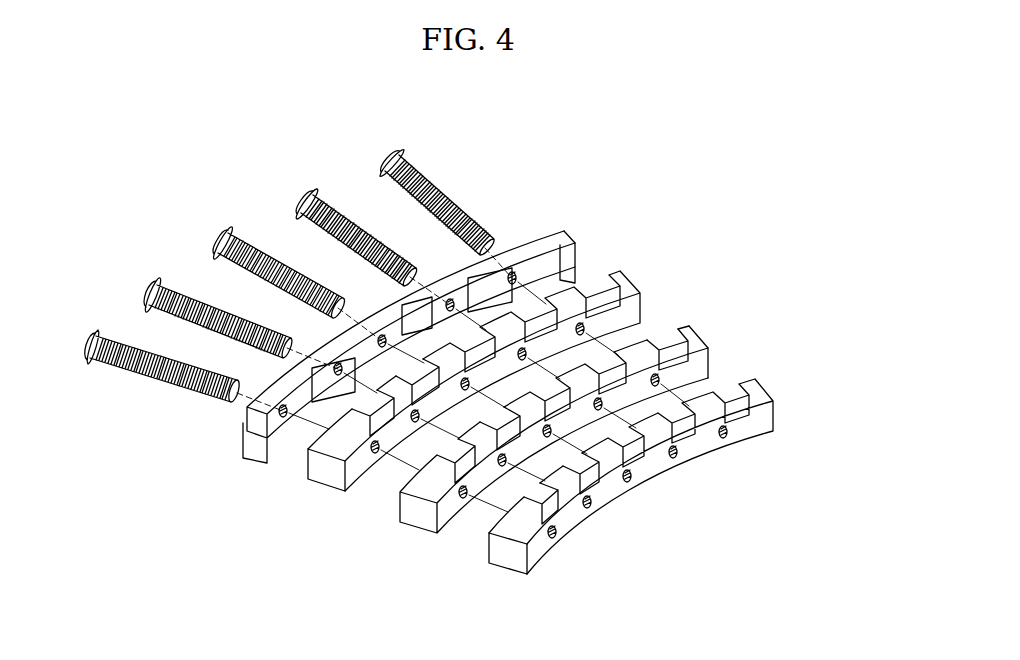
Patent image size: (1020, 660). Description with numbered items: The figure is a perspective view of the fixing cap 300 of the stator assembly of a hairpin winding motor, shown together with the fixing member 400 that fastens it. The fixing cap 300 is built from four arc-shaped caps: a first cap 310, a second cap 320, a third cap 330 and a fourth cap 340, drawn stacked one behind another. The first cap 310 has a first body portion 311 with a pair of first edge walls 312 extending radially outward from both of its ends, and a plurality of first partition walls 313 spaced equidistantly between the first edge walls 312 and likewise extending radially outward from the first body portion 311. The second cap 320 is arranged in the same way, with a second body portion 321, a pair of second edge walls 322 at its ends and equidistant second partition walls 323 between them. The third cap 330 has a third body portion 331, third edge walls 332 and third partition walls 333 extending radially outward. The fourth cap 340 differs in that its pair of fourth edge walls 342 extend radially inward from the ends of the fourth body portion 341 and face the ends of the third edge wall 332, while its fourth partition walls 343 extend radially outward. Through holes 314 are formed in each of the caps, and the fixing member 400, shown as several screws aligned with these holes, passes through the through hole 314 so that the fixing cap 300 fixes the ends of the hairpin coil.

The fixing cap 300 is at (623, 513).
The first cap 310 is at (593, 517).
The first body portion 311 is at (537, 553).
The first edge wall 312 is at (498, 555).
The first partition wall 313 is at (518, 502).
The through hole 314 is at (728, 438).
The second cap 320 is at (621, 389).
The second body portion 321 is at (687, 372).
The second edge wall 322 is at (683, 320).
The second partition wall 323 is at (650, 350).
The third cap 330 is at (418, 433).
The third body portion 331 is at (363, 502).
The third edge wall 332 is at (340, 495).
The third partition wall 333 is at (300, 463).
The fourth cap 340 is at (468, 303).
The fourth body portion 341 is at (537, 247).
The fourth edge wall 342 is at (572, 270).
The fourth partition wall 343 is at (530, 239).
The fixing member 400 is at (447, 167).